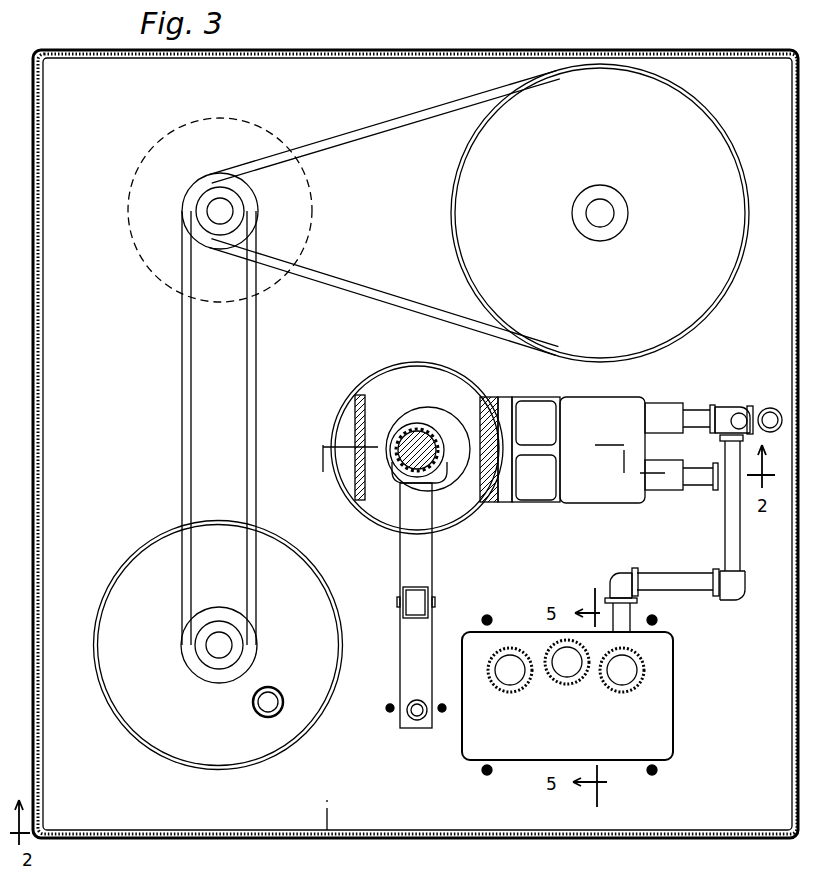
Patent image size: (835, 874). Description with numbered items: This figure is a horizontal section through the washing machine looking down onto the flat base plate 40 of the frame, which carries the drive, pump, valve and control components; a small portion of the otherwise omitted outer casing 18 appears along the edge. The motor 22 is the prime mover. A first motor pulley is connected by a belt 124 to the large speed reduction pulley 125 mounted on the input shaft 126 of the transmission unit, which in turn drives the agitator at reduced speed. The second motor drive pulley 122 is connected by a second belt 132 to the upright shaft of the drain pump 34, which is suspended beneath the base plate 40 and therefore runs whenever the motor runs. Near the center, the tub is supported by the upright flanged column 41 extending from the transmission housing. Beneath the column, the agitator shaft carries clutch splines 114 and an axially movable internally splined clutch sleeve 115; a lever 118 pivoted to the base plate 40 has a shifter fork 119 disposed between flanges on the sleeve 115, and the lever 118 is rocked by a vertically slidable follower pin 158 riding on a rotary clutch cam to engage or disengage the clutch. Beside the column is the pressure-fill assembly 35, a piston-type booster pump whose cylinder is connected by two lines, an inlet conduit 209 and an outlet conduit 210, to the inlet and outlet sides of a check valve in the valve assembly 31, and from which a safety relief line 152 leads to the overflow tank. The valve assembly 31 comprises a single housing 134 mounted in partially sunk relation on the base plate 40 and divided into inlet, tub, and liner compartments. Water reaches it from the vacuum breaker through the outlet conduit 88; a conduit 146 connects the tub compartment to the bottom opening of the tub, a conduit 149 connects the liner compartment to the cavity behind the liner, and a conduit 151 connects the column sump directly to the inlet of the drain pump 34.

The outer casing portion 18 is at (402, 53).
The motor 22 is at (140, 258).
The control valve assembly 31 is at (682, 689).
The drain pump 34 is at (152, 734).
The pressure-fill assembly 35 is at (636, 387).
The base plate 40 is at (330, 63).
The flanged column 41 is at (355, 492).
The outlet conduit 88 is at (566, 683).
The clutch splines 114 is at (413, 428).
The clutch sleeve 115 is at (408, 437).
The lever 118 is at (405, 572).
The shifter fork 119 is at (395, 478).
The second motor drive pulley 122 is at (213, 175).
The belt 124 is at (376, 127).
The speed reduction pulley 125 is at (712, 132).
The input shaft 126 is at (615, 211).
The second belt 132 is at (182, 444).
The valve housing 134 is at (664, 712).
The conduit 146 is at (512, 690).
The conduit 149 is at (626, 690).
The conduit 151 is at (284, 695).
The safety relief line 152 is at (725, 526).
The follower pin 158 is at (416, 720).
The inlet conduit 209 is at (703, 485).
The outlet conduit 210 is at (700, 413).